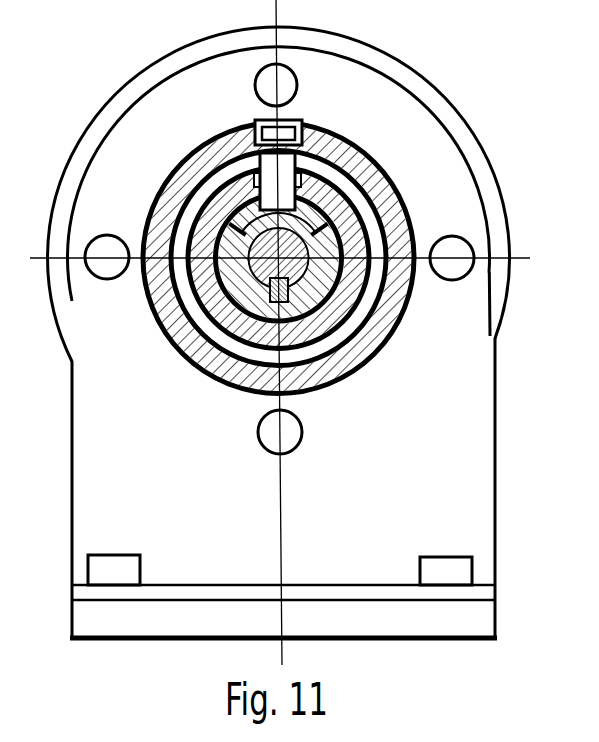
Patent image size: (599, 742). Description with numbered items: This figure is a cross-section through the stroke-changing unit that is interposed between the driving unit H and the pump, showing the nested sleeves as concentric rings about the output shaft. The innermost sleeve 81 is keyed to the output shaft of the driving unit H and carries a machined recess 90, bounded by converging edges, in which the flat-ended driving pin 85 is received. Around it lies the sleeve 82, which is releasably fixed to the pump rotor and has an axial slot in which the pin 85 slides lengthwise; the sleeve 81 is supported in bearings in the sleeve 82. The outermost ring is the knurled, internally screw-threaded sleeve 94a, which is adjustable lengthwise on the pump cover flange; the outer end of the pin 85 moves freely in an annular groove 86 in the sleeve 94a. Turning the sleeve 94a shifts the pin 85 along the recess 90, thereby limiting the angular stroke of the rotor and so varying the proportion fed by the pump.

The driving unit H is at (423, 95).
The sleeve 81 is at (326, 324).
The sleeve 82 is at (271, 308).
The driving pin 85 is at (287, 166).
The annular groove 86 is at (190, 284).
The recess 90 is at (317, 215).
The sleeve 94a is at (367, 161).